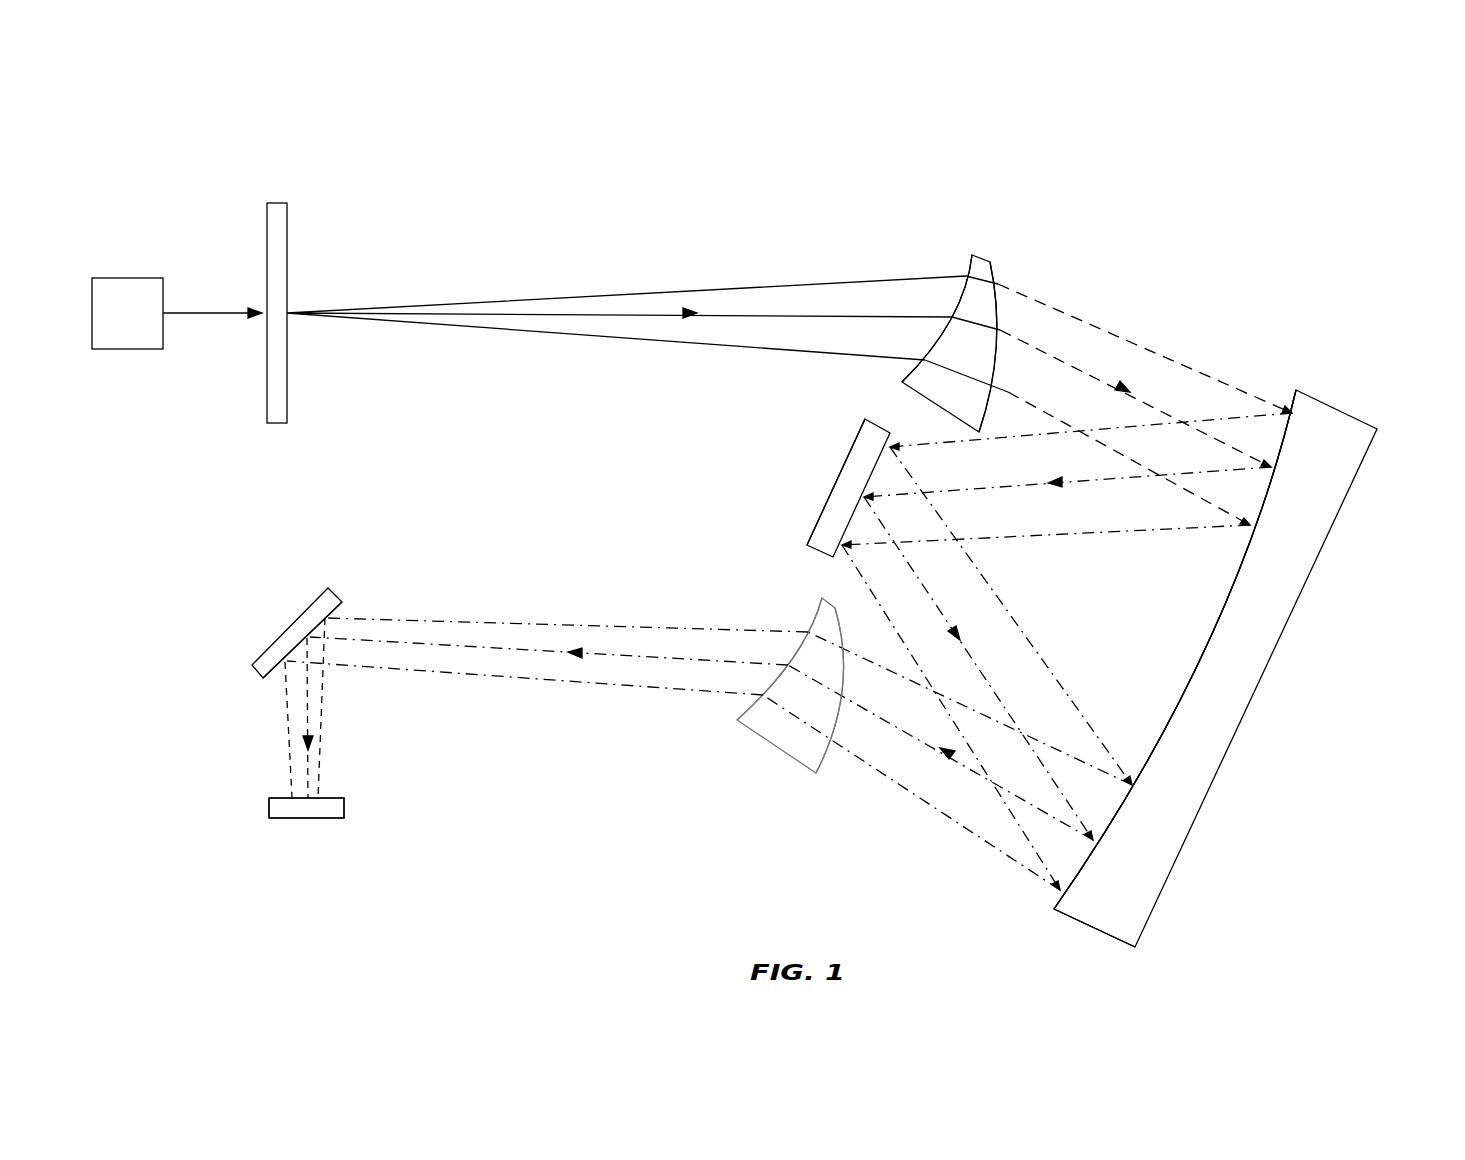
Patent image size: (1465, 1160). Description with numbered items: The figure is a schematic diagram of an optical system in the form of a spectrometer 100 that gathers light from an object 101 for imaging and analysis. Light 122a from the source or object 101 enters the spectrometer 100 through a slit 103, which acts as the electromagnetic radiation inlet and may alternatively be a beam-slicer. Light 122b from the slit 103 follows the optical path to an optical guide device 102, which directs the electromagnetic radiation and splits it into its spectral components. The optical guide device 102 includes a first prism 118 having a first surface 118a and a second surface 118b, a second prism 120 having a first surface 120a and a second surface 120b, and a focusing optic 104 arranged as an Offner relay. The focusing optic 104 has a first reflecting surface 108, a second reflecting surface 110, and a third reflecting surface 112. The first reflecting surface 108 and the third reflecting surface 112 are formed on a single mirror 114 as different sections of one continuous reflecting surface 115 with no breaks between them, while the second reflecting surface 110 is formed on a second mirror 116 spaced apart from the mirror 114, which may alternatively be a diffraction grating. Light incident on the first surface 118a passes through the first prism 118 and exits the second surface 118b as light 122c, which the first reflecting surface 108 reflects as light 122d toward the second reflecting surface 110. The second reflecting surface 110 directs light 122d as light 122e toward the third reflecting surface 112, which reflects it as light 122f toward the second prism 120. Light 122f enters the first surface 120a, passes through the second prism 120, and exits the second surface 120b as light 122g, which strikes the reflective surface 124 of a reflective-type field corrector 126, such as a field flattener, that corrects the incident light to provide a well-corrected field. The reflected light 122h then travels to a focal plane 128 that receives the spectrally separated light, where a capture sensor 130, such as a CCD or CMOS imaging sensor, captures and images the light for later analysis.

The spectrometer 100 is at (403, 158).
The object 101 is at (127, 313).
The optical guide device 102 is at (867, 218).
The slit 103 is at (278, 282).
The focusing optic 104 is at (812, 467).
The first reflecting surface 108 is at (1265, 498).
The second reflecting surface 110 is at (860, 522).
The third reflecting surface 112 is at (1120, 817).
The mirror 114 is at (1333, 432).
The continuous reflecting surface 115 is at (1198, 648).
The second mirror 116 is at (860, 470).
The first prism 118 is at (982, 267).
The first surface of first prism 118a is at (970, 270).
The second surface of first prism 118b is at (1000, 300).
The second prism 120 is at (822, 628).
The first surface of second prism 120a is at (822, 627).
The second surface of second prism 120b is at (818, 730).
The light 122a is at (215, 317).
The light 122b is at (652, 317).
The light 122c is at (1158, 400).
The light 122d is at (1107, 478).
The light 122e is at (1007, 703).
The light 122f is at (900, 725).
The light 122g is at (508, 652).
The light 122h is at (307, 722).
The reflective surface 124 is at (342, 603).
The reflective-type field corrector 126 is at (290, 641).
The focal plane 128 is at (290, 808).
The capture sensor 130 is at (290, 808).